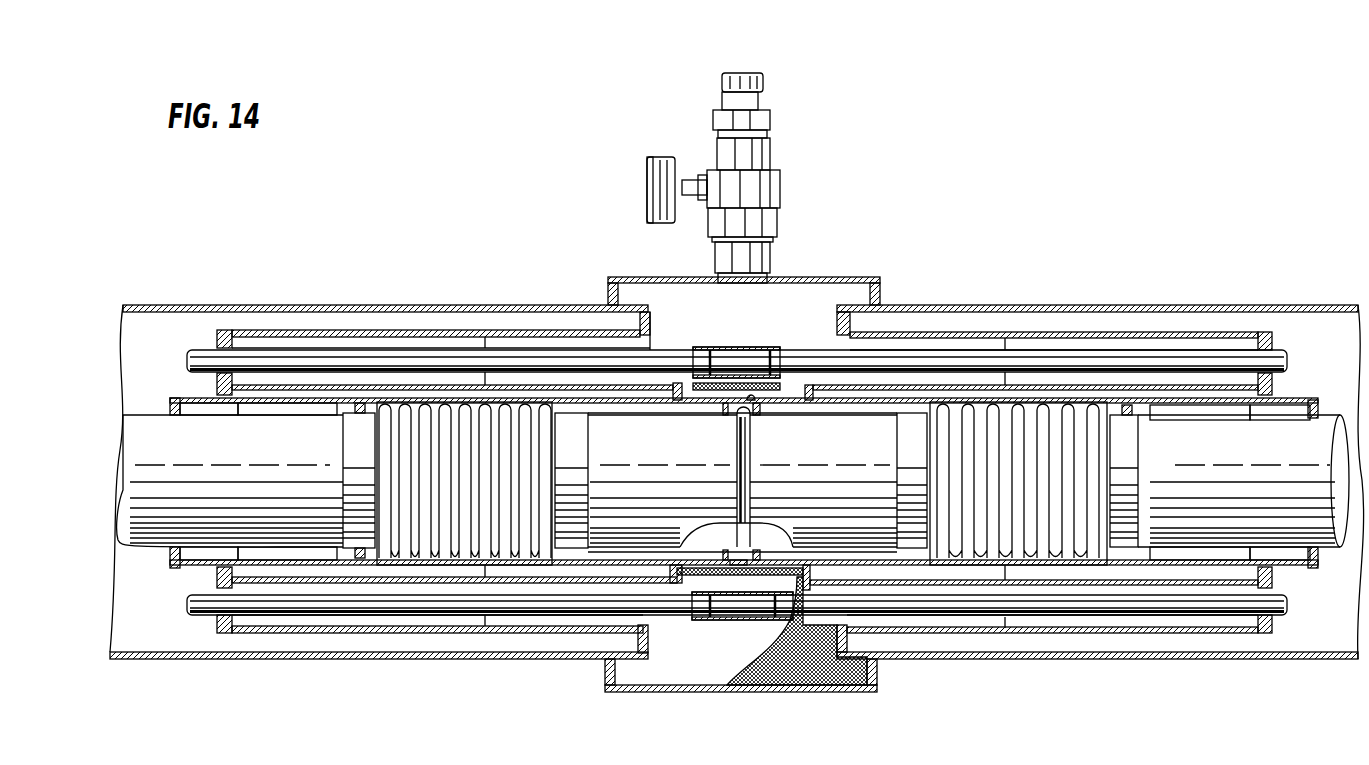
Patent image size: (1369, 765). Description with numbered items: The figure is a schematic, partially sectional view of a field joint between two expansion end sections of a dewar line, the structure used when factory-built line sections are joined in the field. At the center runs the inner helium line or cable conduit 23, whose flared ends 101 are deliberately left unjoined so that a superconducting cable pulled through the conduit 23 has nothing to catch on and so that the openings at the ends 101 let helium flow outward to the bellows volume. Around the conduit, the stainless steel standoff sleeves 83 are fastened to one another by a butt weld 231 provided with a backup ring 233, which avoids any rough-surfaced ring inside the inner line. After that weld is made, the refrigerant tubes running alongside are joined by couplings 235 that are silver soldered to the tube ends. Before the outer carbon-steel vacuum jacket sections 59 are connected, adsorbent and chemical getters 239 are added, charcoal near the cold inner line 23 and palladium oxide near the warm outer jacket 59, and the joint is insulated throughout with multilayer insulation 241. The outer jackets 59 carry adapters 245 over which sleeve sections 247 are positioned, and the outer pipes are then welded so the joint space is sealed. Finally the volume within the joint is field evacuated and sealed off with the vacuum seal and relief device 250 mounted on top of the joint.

The cable conduit 23 is at (150, 542).
The outer vacuum jacket 59 is at (350, 305).
The standoff sleeve 83 is at (808, 406).
The ends of cable conduit 101 is at (737, 417).
The butt weld 231 is at (756, 416).
The backup ring 233 is at (740, 398).
The coupling 235 is at (736, 347).
The getter 239 is at (790, 388).
The multilayer insulation 241 is at (810, 680).
The adapter 245 is at (607, 292).
The sleeve section 247 is at (790, 277).
The vacuum seal and relief device 250 is at (680, 142).